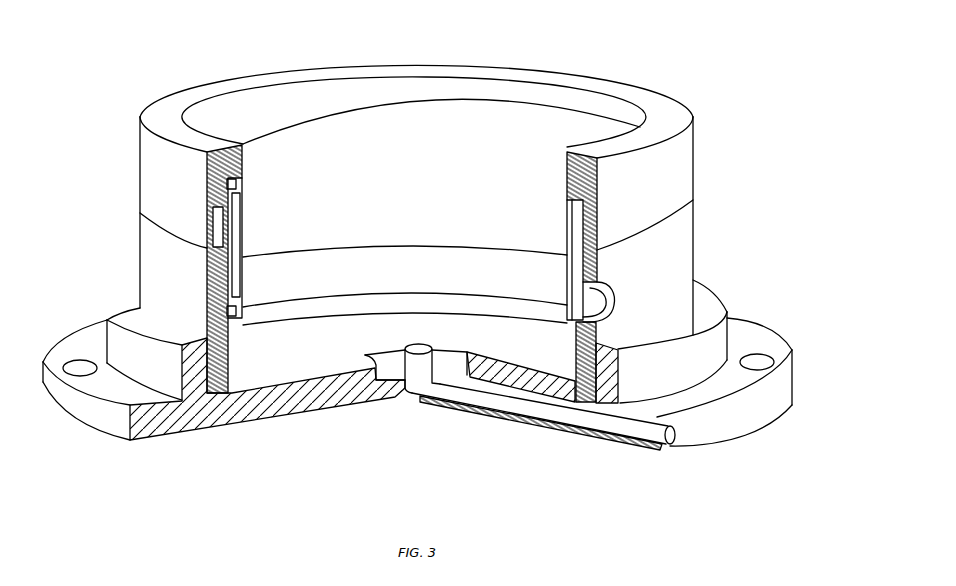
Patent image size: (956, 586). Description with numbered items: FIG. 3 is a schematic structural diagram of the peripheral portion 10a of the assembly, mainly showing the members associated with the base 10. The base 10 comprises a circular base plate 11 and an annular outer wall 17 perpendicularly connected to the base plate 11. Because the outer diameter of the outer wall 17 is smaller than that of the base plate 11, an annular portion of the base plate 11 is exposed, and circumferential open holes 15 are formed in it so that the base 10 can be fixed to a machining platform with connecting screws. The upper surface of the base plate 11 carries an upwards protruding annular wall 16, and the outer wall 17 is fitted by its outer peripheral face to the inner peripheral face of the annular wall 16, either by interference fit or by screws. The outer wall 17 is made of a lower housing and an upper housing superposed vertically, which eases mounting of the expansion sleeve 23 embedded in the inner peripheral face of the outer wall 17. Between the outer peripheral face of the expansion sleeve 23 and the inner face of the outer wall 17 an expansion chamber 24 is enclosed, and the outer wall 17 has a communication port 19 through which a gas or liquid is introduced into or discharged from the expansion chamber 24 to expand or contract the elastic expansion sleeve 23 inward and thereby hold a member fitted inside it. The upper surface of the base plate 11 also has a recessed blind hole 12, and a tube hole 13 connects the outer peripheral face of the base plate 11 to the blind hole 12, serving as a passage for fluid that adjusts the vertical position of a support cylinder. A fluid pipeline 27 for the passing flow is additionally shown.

The base 10 is at (130, 171).
The peripheral portion 10a is at (637, 69).
The base plate 11 is at (787, 385).
The blind hole 12 is at (455, 362).
The tube hole 13 is at (500, 398).
The circumferential open holes 15 is at (758, 356).
The annular wall 16 is at (717, 305).
The outer wall 17 is at (678, 150).
The communication port 19 is at (601, 300).
The expansion sleeve 23 is at (238, 185).
The expansion chamber 24 is at (233, 222).
The fluid pipeline 27 is at (562, 412).